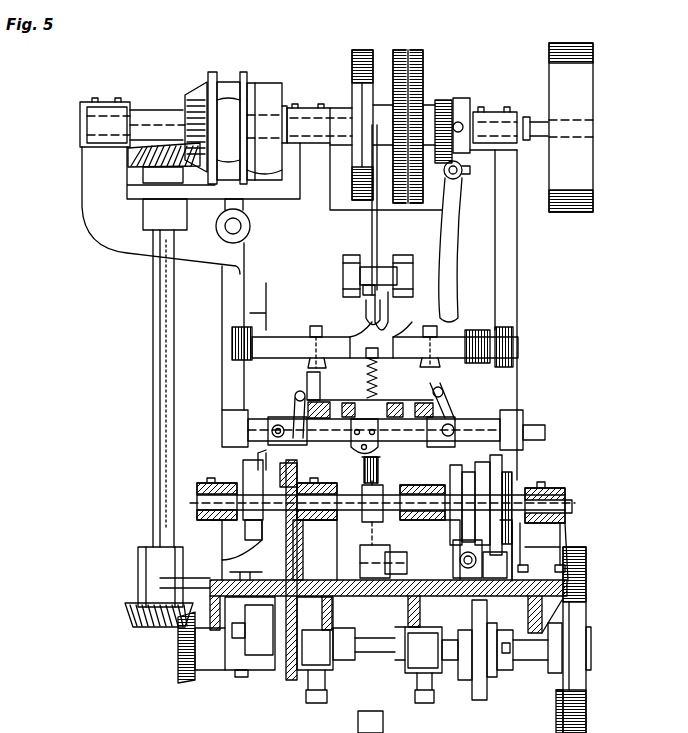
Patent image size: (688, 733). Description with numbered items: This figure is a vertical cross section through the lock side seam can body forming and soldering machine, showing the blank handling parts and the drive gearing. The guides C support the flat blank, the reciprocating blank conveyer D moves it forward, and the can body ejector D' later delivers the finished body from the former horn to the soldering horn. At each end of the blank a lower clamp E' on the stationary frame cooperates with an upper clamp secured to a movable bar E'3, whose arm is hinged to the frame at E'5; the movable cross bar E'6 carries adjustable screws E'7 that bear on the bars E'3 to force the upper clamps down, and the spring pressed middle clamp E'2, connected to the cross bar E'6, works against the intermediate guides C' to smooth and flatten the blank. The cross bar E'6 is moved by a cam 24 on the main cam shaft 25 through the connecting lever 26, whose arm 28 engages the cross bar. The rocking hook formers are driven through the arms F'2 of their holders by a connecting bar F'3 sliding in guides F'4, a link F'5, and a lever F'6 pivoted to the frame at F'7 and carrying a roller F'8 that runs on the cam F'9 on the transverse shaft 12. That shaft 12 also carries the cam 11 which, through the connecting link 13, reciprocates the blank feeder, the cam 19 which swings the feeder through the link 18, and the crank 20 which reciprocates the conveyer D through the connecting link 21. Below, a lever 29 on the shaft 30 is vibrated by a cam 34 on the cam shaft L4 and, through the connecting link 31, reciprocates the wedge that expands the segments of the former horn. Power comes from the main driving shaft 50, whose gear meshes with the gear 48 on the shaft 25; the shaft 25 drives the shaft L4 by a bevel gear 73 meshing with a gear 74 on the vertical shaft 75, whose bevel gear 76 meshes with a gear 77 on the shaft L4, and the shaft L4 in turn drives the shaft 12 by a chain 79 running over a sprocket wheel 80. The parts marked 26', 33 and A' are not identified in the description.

The cam 11 is at (243, 470).
The transverse shaft 12 is at (595, 508).
The connecting link 13 is at (261, 454).
The link 18 is at (608, 452).
The cam 19 is at (513, 528).
The crank 20 is at (361, 511).
The connecting link 21 is at (372, 532).
The cam 24 is at (362, 50).
The main cam shaft 25 is at (183, 92).
The connecting lever 26 is at (381, 231).
The pulley 26' is at (390, 279).
The arm 28 is at (368, 312).
The arm or lever 29 is at (362, 558).
The shaft 30 is at (412, 585).
The connecting link 31 is at (364, 476).
The clutch drum 33 is at (243, 72).
The cam 34 is at (478, 700).
The gear 48 is at (428, 50).
The main driving shaft 50 is at (540, 142).
The bevel gear 73 is at (210, 72).
The gear 74 is at (125, 162).
The shaft 75 is at (155, 280).
The bevel gear 76 is at (132, 618).
The gear 77 is at (186, 678).
The chain 79 is at (288, 545).
The sprocket wheel 80 is at (292, 672).
The lever A' is at (500, 241).
The guides C is at (394, 402).
The intermediate guides C' is at (305, 431).
The reciprocating blank conveyer D is at (370, 392).
The can body ejector D' is at (348, 441).
The lower clamp E' is at (365, 364).
The movable clamp E'2 is at (330, 393).
The movable bars E'3 is at (382, 373).
The hinge E'5 is at (563, 383).
The movable cross bar E'6 is at (420, 337).
The adjustable screws or pins E'7 is at (375, 331).
The arms F'2 is at (378, 410).
The connecting bar F'3 is at (550, 434).
The guides F'4 is at (379, 420).
The link F'5 is at (341, 429).
The lever F'6 is at (514, 494).
The pivot F'7 is at (464, 581).
The roller F'8 is at (407, 538).
The cam F'9 is at (532, 516).
The cam shaft L4 is at (463, 650).